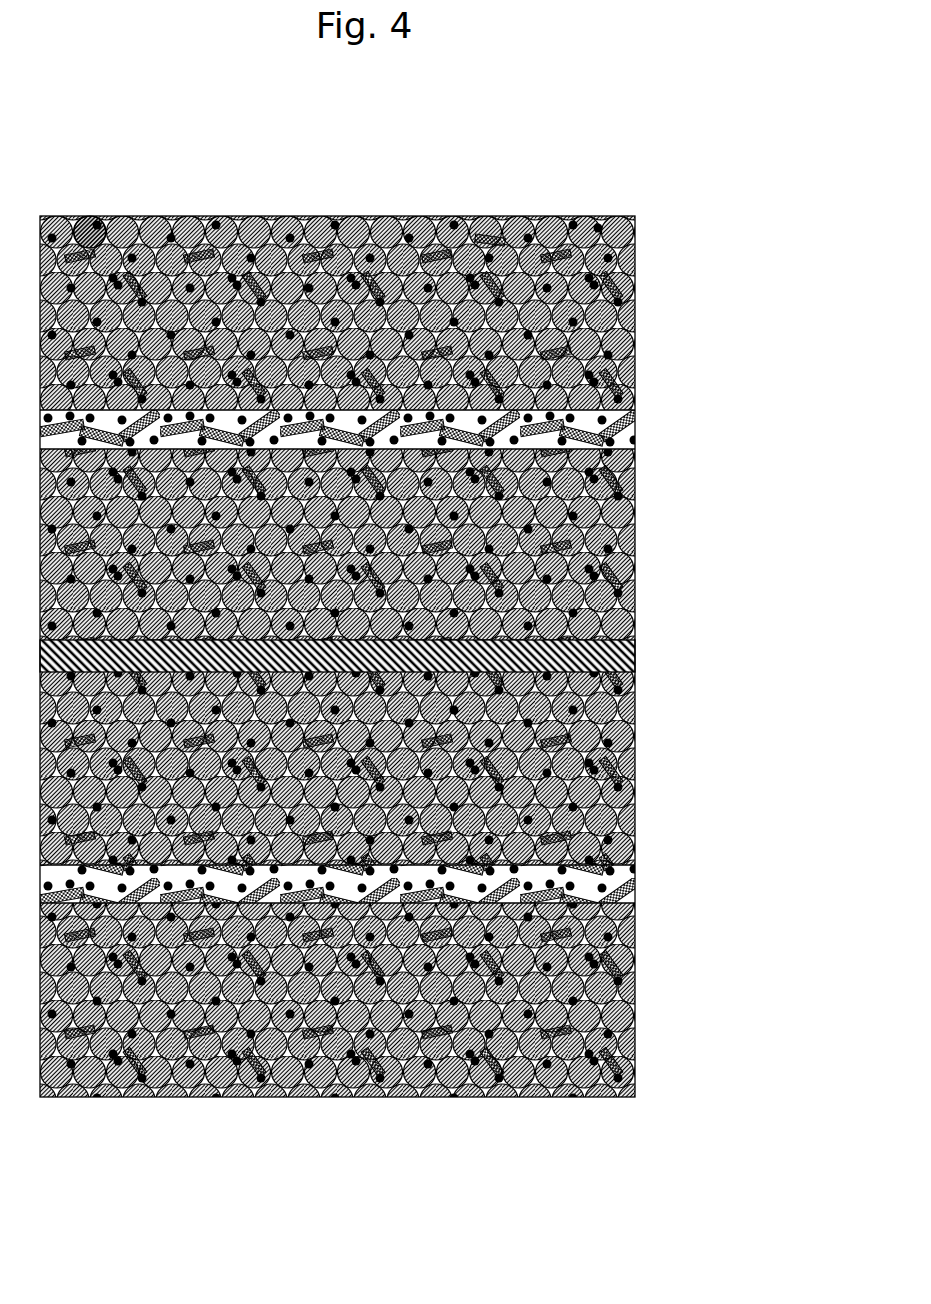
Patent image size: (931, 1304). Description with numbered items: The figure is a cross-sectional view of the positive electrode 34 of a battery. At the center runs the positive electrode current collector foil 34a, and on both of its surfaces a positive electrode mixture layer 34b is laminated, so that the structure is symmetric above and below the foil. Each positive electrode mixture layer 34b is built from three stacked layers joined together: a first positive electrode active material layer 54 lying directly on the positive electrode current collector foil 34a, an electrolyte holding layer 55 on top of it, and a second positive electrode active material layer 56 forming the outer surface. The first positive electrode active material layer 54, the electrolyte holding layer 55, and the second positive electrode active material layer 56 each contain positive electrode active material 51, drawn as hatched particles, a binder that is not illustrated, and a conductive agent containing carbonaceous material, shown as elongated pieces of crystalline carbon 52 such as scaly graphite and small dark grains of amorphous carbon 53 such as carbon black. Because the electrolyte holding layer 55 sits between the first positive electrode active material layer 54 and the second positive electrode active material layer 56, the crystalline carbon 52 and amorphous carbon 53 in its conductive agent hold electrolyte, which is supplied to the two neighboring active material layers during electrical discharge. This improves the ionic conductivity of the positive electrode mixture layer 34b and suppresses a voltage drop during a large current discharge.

The positive electrode 34 is at (789, 403).
The positive electrode current collector foil 34a is at (636, 655).
The positive electrode mixture layer 34b is at (717, 255).
The positive electrode active material 51 is at (90, 216).
The crystalline carbon 52 is at (486, 236).
The amorphous carbon 53 is at (598, 224).
The first positive electrode active material layer 54 is at (626, 563).
The electrolyte holding layer 55 is at (628, 410).
The second positive electrode active material layer 56 is at (626, 268).